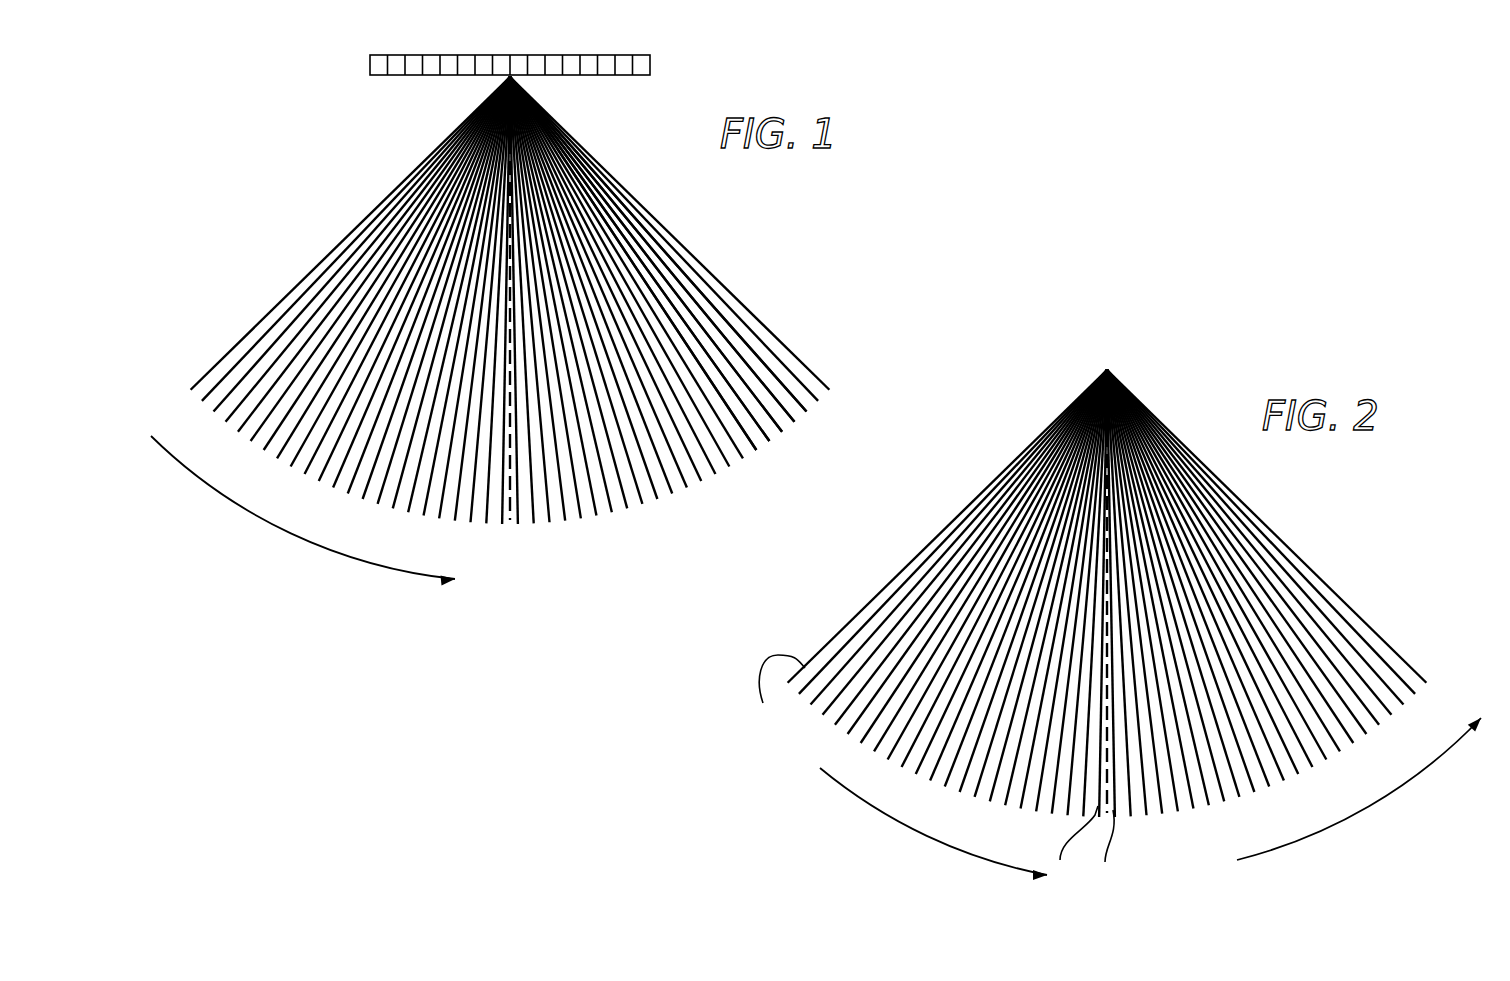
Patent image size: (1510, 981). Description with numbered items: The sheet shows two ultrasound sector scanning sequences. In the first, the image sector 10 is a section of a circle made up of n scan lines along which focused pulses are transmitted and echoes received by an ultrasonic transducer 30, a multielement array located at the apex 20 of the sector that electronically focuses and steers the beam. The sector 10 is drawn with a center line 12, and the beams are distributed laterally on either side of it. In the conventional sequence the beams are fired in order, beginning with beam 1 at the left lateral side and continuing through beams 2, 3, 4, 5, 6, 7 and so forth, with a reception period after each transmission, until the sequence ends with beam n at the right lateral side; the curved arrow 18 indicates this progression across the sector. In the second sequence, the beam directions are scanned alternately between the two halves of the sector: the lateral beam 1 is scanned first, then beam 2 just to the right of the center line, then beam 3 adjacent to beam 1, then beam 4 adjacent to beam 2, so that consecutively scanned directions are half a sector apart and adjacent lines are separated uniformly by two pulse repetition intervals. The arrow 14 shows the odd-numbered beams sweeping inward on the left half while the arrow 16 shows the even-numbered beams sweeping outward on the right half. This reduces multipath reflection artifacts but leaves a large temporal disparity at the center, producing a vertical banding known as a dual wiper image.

In FIG. 1, the image sector 10 is at (500, 330).
In FIG. 2, the image sector 10 is at (1087, 611).
In FIG. 1, the center line 12 is at (547, 330).
In FIG. 1, the apex 20 is at (542, 101).
In FIG. 2, the apex 20 is at (1136, 376).
In FIG. 1, the ultrasonic transducer 30 is at (413, 75).
In FIG. 1, the scan direction arrow 18 is at (290, 537).
In FIG. 2, the first scan sequence direction arrow 14 is at (862, 808).
In FIG. 2, the second scan sequence direction arrow 16 is at (1388, 797).
In FIG. 1, the scan line n is at (316, 310).
In FIG. 1, the beam 1 is at (207, 378).
In FIG. 1, the beam 2 is at (494, 260).
In FIG. 1, the beam 3 is at (495, 266).
In FIG. 1, the beam 4 is at (496, 271).
In FIG. 1, the beam 5 is at (499, 277).
In FIG. 1, the beam 6 is at (500, 283).
In FIG. 1, the beam 7 is at (502, 288).